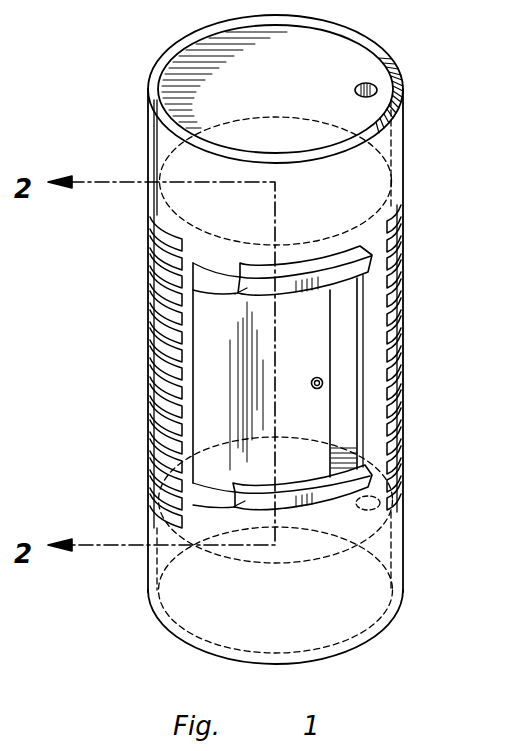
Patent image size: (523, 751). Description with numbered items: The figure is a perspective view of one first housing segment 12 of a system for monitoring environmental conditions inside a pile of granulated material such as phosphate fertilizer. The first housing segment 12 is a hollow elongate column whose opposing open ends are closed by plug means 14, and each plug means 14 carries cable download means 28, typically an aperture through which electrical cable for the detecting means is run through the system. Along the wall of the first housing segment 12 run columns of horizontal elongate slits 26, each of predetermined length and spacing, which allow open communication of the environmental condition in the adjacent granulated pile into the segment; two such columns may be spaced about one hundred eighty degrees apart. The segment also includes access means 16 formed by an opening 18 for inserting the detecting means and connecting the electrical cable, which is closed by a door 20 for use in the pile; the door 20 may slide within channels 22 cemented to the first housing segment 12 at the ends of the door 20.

The first housing segment 12 is at (403, 183).
The plug means 14 is at (207, 93).
The access means 16 is at (229, 257).
The opening 18 is at (342, 385).
The door 20 is at (188, 353).
The channels 22 is at (245, 284).
The horizontal elongate slits 26 is at (150, 413).
The cable download means 28 is at (370, 84).